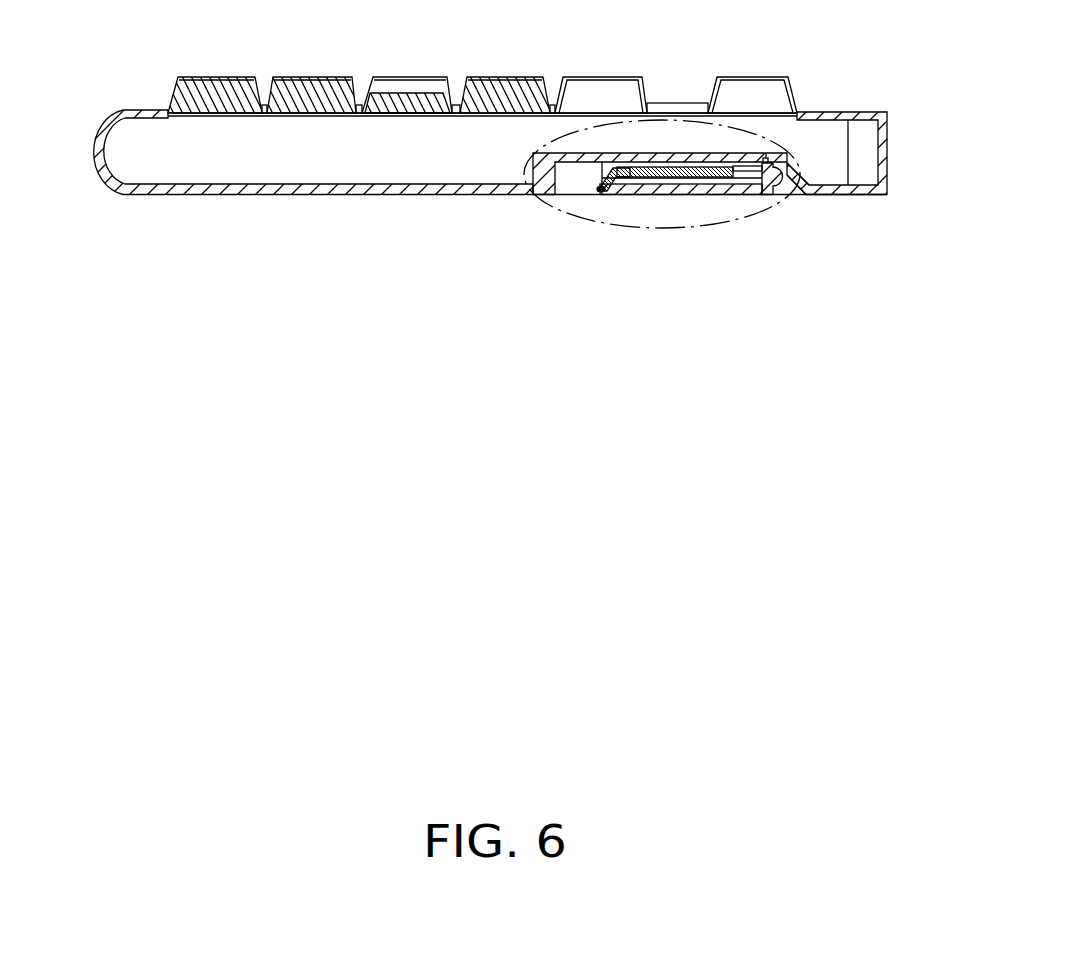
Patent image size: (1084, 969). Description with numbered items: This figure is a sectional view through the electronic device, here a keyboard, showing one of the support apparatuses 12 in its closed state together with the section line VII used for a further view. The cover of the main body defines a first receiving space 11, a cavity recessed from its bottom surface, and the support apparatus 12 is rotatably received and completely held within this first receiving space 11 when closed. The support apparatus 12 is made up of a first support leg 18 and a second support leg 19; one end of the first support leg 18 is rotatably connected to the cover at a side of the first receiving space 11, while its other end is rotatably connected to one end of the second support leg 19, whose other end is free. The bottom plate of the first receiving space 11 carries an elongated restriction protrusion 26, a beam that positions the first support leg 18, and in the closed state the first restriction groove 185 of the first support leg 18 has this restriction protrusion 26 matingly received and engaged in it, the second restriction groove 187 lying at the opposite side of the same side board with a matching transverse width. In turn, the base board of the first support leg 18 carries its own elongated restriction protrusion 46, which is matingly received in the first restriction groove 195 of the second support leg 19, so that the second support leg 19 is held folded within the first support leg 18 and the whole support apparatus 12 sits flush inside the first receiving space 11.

The first receiving space 11 is at (565, 192).
The support apparatus 12 is at (733, 205).
The first support leg 18 is at (697, 192).
The second support leg 19 is at (663, 178).
The restriction protrusion 26 is at (766, 161).
The restriction protrusion 46 is at (627, 192).
The first restriction groove 185 is at (790, 163).
The second restriction groove 187 is at (775, 185).
The first restriction groove 195 is at (599, 187).
The section line VII is at (522, 162).